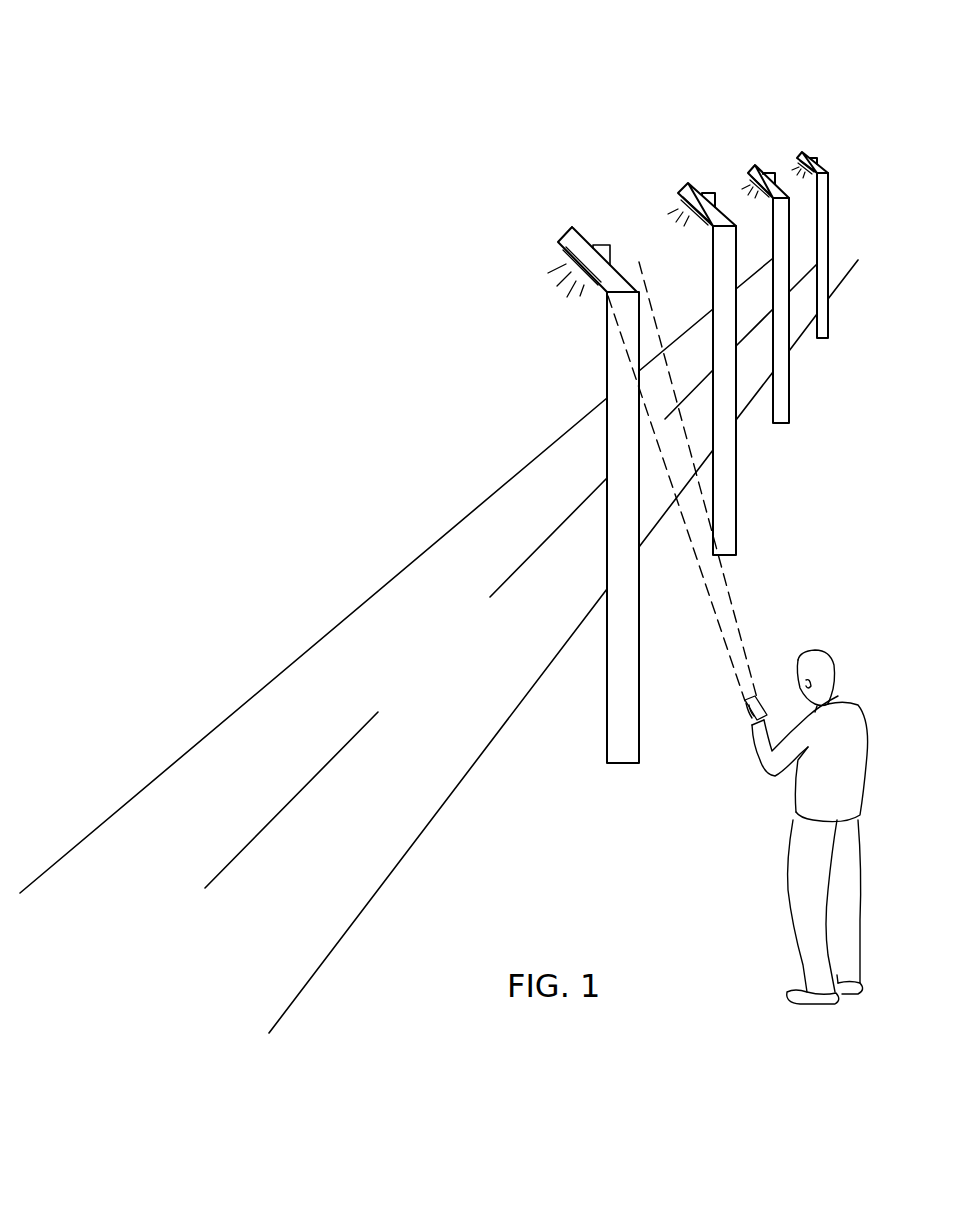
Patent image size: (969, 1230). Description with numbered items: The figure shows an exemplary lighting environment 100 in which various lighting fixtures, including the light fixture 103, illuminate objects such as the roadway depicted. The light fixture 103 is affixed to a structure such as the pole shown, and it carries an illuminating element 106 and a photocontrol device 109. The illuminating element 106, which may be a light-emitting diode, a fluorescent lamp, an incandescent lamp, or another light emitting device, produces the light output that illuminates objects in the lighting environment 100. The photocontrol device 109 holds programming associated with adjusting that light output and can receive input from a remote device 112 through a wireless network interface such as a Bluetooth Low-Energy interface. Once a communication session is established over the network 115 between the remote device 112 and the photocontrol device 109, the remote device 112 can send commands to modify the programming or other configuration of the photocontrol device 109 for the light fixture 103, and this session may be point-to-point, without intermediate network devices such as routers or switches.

The lighting environment 100 is at (266, 78).
The light fixture 103 is at (571, 224).
The illuminating element 106 is at (560, 261).
The photocontrol device 109 is at (602, 247).
The remote device 112 is at (761, 697).
The network 115 is at (708, 628).